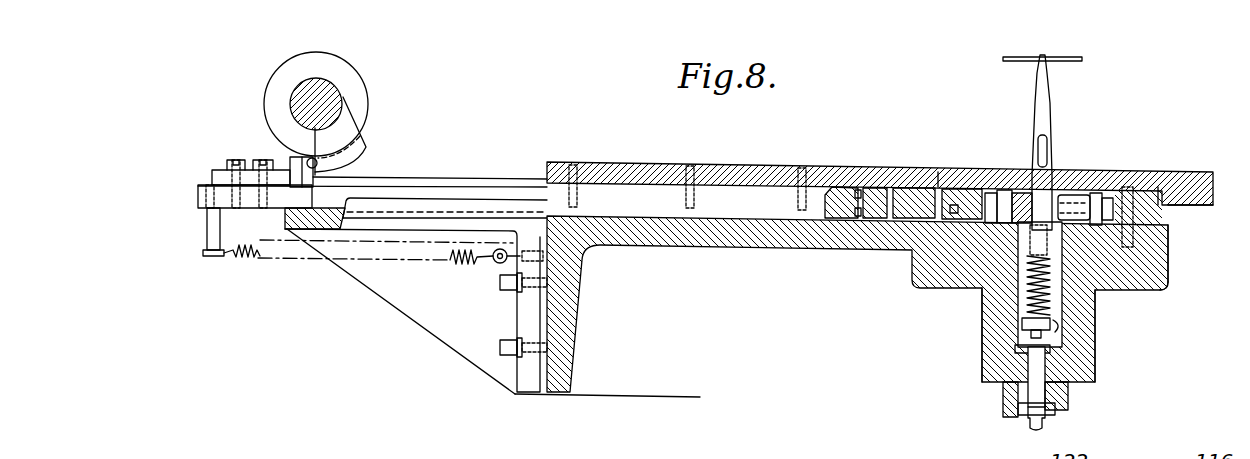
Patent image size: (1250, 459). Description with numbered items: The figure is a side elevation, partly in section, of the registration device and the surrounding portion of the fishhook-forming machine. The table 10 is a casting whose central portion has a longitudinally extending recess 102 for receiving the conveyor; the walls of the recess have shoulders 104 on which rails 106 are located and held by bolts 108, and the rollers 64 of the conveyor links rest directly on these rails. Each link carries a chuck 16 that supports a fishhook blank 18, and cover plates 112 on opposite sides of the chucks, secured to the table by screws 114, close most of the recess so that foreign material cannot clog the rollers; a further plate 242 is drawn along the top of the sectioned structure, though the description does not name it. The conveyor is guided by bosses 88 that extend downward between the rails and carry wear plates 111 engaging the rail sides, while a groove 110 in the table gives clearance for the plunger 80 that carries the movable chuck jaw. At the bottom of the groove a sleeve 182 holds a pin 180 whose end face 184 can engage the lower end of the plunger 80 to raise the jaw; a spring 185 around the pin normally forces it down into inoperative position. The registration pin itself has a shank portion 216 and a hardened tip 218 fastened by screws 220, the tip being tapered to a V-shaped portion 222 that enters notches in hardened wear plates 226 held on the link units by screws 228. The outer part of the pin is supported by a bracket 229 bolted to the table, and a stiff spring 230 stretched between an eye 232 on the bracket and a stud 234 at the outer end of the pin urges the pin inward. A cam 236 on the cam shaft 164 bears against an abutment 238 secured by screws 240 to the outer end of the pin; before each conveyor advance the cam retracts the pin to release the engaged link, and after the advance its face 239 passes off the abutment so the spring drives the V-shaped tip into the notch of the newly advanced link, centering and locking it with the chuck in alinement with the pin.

The table 10 is at (1190, 183).
The chuck 16 is at (1052, 123).
The fishhook blank 18 is at (1063, 55).
The rollers 64 is at (987, 213).
The plunger 80 is at (1050, 347).
The boss 88 is at (1157, 290).
The recess 102 is at (1113, 223).
The shoulders 104 is at (1127, 267).
The rails 106 is at (1107, 243).
The bolts 108 is at (1013, 277).
The groove 110 is at (1060, 321).
The wear plates 111 is at (1065, 175).
The cover plates 112 is at (1000, 193).
The screws 114 is at (938, 172).
The cam shaft 164 is at (310, 90).
The pin 180 is at (1033, 372).
The sleeve 182 is at (1008, 397).
The end face 184 is at (1030, 323).
The spring 185 is at (1048, 420).
The shank portion 216 is at (833, 212).
The hardened tip 218 is at (900, 208).
The screws 220 is at (855, 193).
The V-shaped portion 222 is at (983, 183).
The wear plates 226 is at (1018, 183).
The screws 228 is at (997, 193).
The bracket 229 is at (417, 222).
The spring 230 is at (458, 262).
The eye 232 is at (493, 263).
The stud 234 is at (207, 228).
The cam 236 is at (360, 147).
The abutment 238 is at (295, 165).
The face 239 is at (318, 163).
The screws 240 is at (258, 160).
The cover plate 242 is at (762, 177).